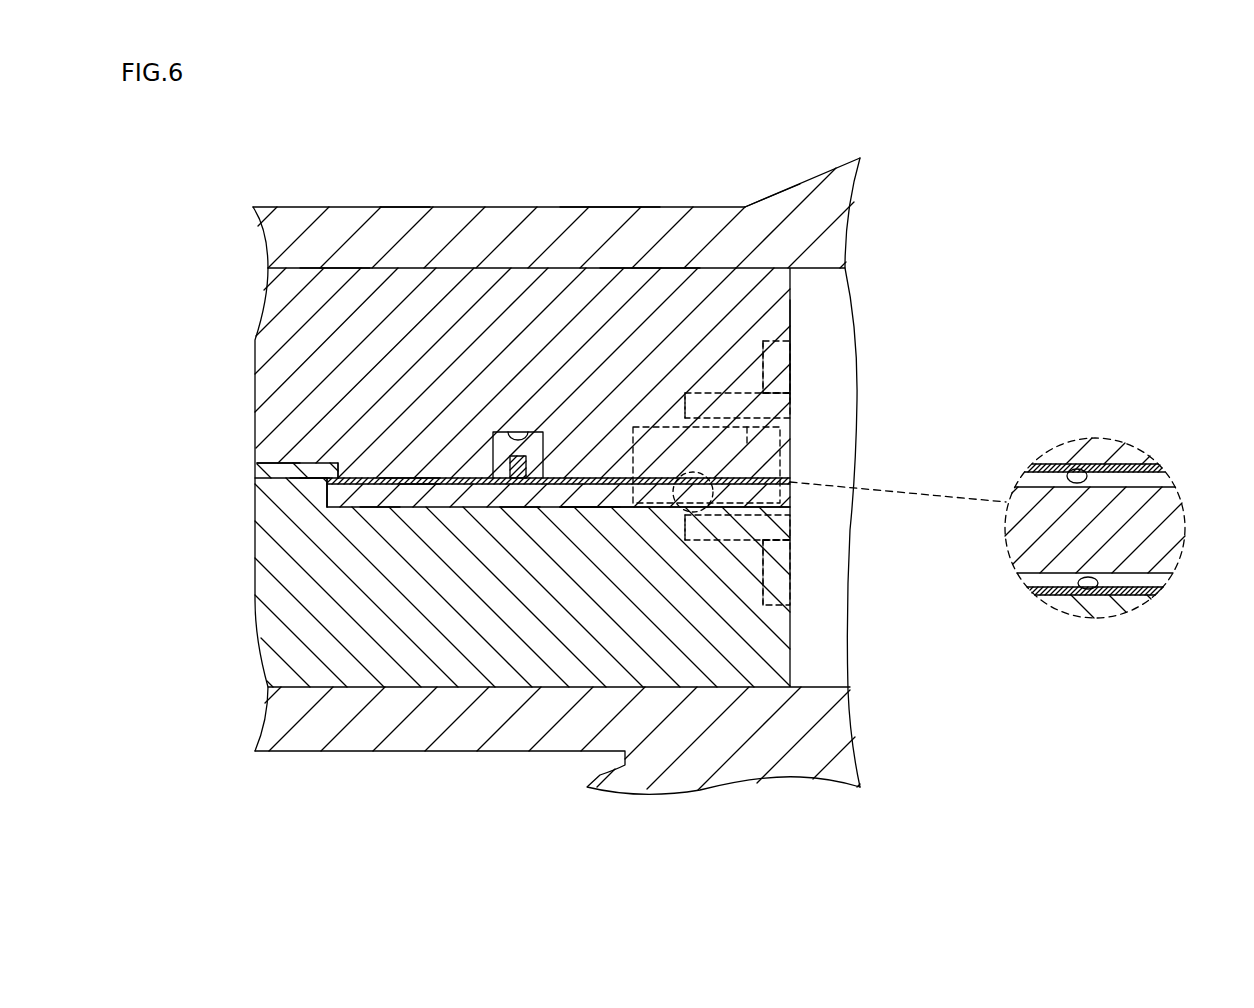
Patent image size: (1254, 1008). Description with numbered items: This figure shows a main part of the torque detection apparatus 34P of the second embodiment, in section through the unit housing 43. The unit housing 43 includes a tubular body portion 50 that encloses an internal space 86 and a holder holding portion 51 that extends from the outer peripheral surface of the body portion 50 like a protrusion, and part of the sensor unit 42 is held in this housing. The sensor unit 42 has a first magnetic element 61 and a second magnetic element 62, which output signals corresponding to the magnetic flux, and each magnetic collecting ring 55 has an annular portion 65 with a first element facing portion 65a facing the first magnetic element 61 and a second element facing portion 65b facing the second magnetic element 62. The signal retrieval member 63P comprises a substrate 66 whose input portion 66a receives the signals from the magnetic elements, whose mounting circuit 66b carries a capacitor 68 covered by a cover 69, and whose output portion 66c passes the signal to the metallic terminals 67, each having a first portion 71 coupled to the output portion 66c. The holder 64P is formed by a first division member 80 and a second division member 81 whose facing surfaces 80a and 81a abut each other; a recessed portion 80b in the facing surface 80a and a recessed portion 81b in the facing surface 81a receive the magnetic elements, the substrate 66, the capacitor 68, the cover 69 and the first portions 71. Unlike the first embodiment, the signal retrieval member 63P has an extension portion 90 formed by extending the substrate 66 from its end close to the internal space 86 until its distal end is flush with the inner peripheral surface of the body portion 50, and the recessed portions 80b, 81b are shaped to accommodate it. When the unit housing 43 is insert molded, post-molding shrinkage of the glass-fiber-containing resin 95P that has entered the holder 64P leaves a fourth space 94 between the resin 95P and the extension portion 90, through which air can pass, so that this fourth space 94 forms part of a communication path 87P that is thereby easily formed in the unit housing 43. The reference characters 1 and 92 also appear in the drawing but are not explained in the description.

The liquid ejecting head 1 is at (470, 848).
The torque detection apparatus 34P is at (762, 180).
The sensor unit 42 is at (653, 256).
The unit housing 43 is at (615, 200).
The body portion 50 is at (838, 200).
The holder holding portion 51 is at (402, 220).
The magnetic collecting ring 55 is at (861, 470).
The first magnetic element 61 is at (748, 445).
The second magnetic element 62 is at (790, 397).
The signal retrieval member 63P is at (385, 518).
The holder 64P is at (341, 256).
The annular portion 65 is at (775, 350).
The first element facing portion 65a is at (745, 388).
The second element facing portion 65b is at (866, 467).
The substrate 66 is at (493, 518).
The input portion 66a is at (588, 506).
The mounting circuit 66b is at (408, 472).
The output portion 66c is at (335, 488).
The terminals 67 is at (219, 478).
The capacitor 68 is at (494, 455).
The cover 69 is at (524, 462).
The first portion 71 is at (280, 470).
The first division member 80 is at (722, 670).
The facing surface 80a is at (345, 497).
The recessed portion 80b is at (790, 500).
The second division member 81 is at (695, 290).
The facing surface 81a is at (395, 468).
The recessed portion 81b is at (517, 430).
The internal space 86 is at (835, 300).
The communication path 87P is at (525, 518).
The extension portion 90 is at (790, 487).
The gap 92 is at (420, 500).
The fourth space 94 is at (1076, 469).
The resin 95P is at (1158, 467).